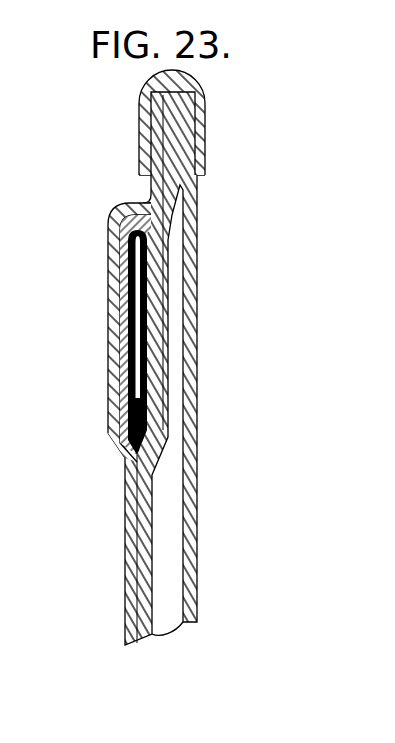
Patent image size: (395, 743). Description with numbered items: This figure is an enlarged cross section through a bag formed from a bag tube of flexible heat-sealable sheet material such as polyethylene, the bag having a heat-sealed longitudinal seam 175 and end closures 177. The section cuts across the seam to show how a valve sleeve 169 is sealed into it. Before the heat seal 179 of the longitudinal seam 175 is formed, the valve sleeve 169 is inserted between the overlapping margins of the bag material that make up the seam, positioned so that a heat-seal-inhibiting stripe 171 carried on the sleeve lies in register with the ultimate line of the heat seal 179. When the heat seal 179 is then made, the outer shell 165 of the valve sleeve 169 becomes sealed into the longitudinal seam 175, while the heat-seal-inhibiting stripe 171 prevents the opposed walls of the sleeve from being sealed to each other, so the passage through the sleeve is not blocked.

The end closures 177 is at (138, 100).
The heat seal 179 is at (122, 256).
The heat-seal-inhibiting stripe 171 is at (130, 308).
The valve sleeve 169 is at (124, 364).
The outer shell 165 is at (118, 431).
The longitudinal seam 175 is at (131, 603).